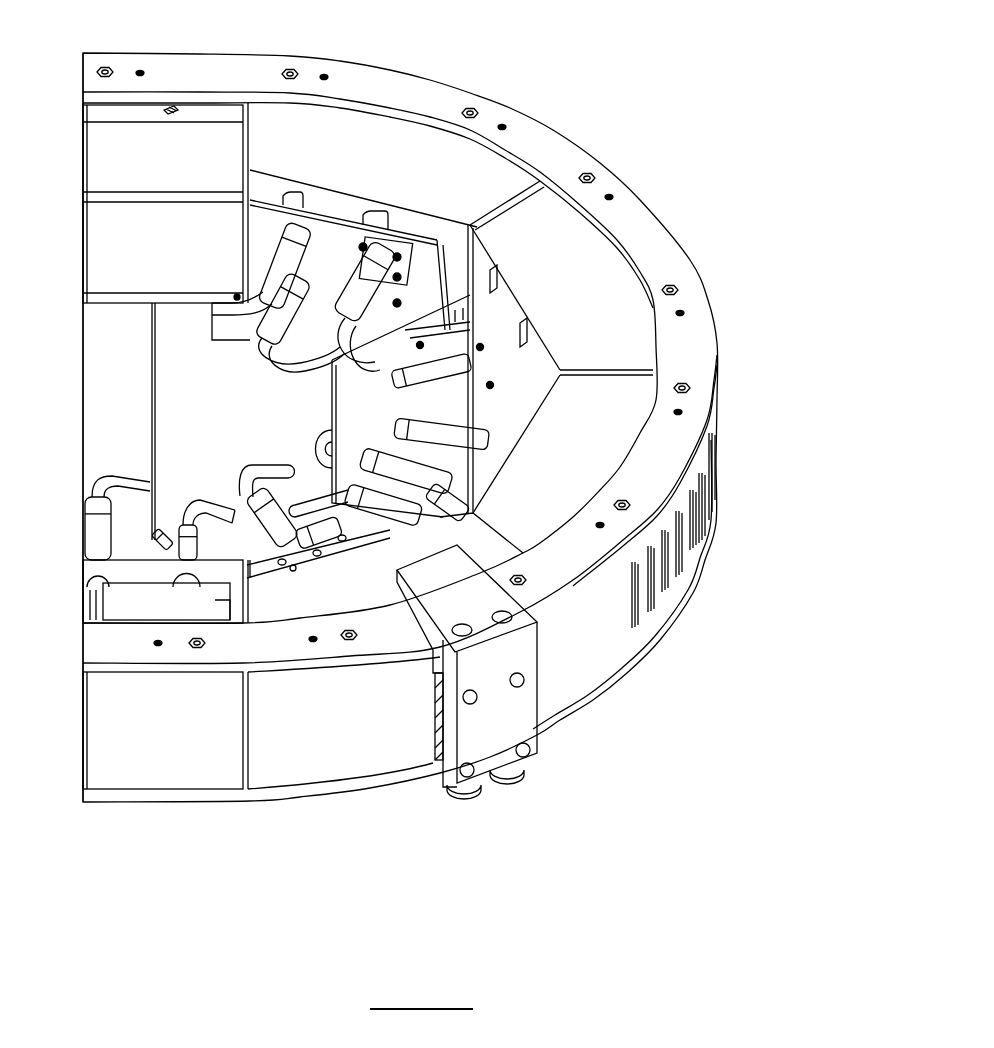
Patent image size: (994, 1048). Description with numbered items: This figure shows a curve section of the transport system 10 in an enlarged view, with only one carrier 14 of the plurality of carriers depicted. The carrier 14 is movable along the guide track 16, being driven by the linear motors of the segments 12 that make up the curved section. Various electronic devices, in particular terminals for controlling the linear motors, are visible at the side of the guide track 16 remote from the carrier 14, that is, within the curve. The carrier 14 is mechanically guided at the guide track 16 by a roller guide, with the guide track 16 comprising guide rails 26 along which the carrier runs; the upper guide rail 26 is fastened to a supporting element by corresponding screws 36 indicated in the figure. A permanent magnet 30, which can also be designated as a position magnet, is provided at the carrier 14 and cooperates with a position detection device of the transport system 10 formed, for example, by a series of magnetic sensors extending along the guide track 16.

The transport system 10 is at (660, 92).
The segments 12 is at (178, 175).
The carrier 14 is at (510, 717).
The guide track 16 is at (728, 392).
The guide rails 26 is at (657, 247).
The permanent magnet 30 is at (415, 550).
The screws 36 is at (476, 112).